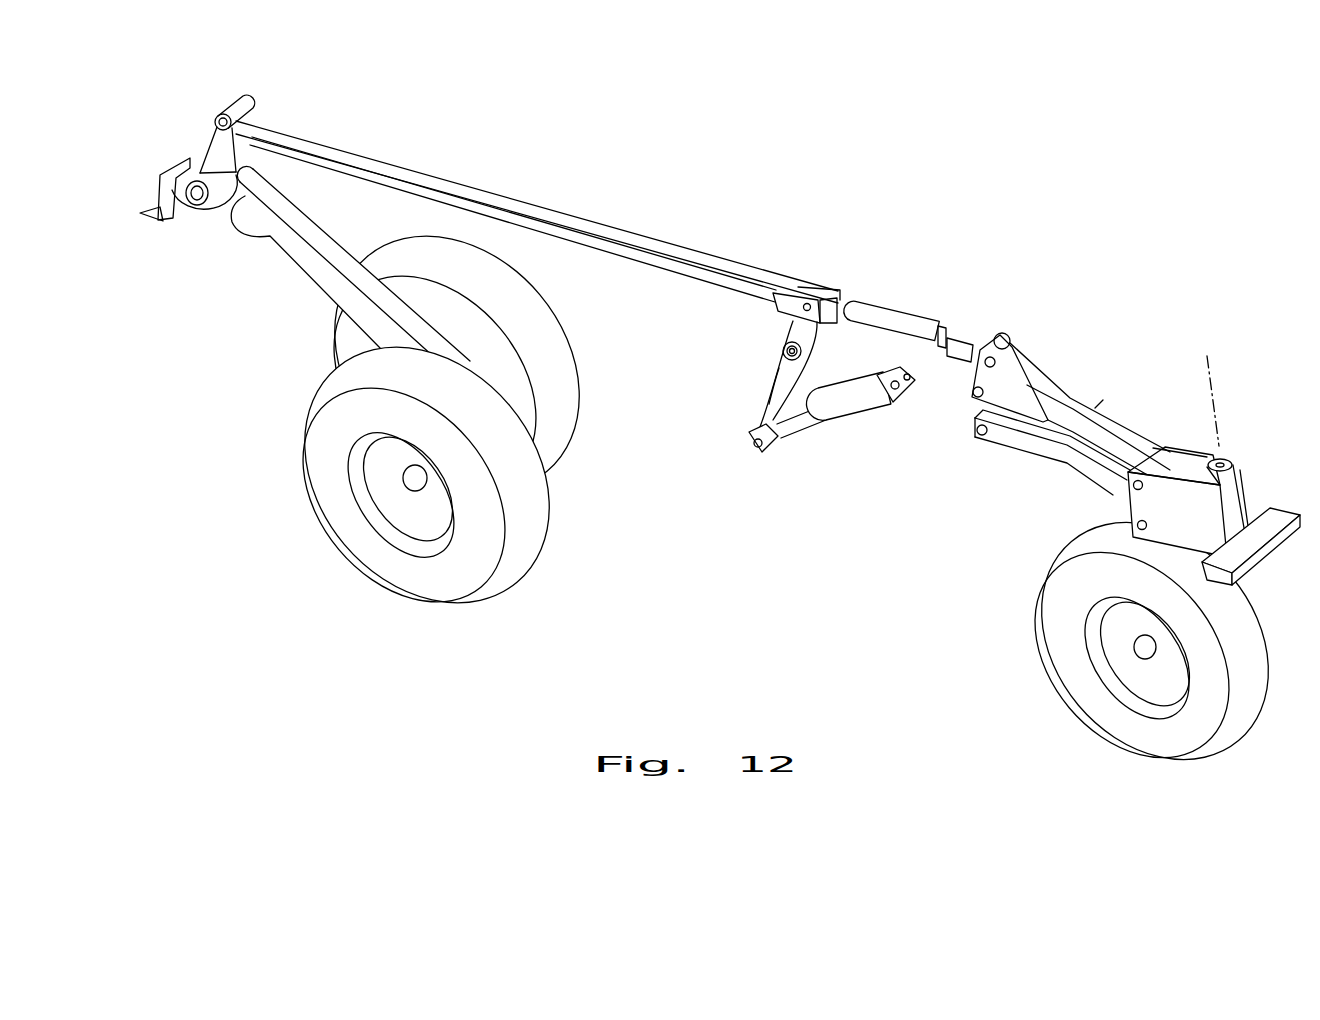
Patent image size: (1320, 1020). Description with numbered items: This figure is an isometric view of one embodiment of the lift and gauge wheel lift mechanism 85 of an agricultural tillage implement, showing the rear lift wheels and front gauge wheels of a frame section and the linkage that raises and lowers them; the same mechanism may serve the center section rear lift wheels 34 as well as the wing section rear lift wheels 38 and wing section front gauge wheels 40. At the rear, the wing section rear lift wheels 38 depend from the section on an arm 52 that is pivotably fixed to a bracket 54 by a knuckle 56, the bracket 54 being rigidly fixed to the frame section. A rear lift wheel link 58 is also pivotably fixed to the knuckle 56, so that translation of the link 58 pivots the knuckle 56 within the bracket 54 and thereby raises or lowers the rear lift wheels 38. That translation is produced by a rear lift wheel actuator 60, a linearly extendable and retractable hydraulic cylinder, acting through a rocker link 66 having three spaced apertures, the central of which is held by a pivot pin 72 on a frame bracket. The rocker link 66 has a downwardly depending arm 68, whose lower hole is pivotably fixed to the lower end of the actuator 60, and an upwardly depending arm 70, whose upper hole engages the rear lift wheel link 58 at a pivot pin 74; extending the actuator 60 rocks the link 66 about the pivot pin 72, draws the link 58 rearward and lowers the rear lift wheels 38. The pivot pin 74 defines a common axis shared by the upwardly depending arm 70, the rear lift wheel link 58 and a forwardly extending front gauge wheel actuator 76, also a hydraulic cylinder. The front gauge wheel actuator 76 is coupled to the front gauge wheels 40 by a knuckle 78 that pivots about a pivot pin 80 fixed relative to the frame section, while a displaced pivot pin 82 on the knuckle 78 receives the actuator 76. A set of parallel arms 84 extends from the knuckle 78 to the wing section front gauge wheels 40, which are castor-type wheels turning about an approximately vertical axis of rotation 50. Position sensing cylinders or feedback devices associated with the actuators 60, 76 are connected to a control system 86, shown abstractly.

The center section rear lift wheels 34 is at (552, 325).
The wing section rear lift wheels 38 is at (535, 508).
The wing section front gauge wheels 40 is at (1072, 678).
The axis of rotation 50 is at (1232, 420).
The arm 52 is at (325, 292).
The bracket 54 is at (178, 217).
The knuckle 56 is at (222, 145).
The rear lift wheel link 58 is at (540, 215).
The rear lift wheel actuator 60 is at (848, 418).
The rocker link 66 is at (775, 378).
The downwardly depending arm 68 is at (760, 410).
The upwardly depending arm 70 is at (812, 340).
The pivot pin 72 is at (783, 360).
The pivot pin 74 is at (795, 322).
The front gauge wheel actuator 76 is at (890, 315).
The knuckle 78 is at (1035, 355).
The pivot pin 80 is at (975, 400).
The pivot pin 82 is at (965, 345).
The parallel arms 84 is at (1110, 432).
The lift and gauge wheel lift mechanism 85 is at (415, 165).
The control system 86 is at (1095, 408).